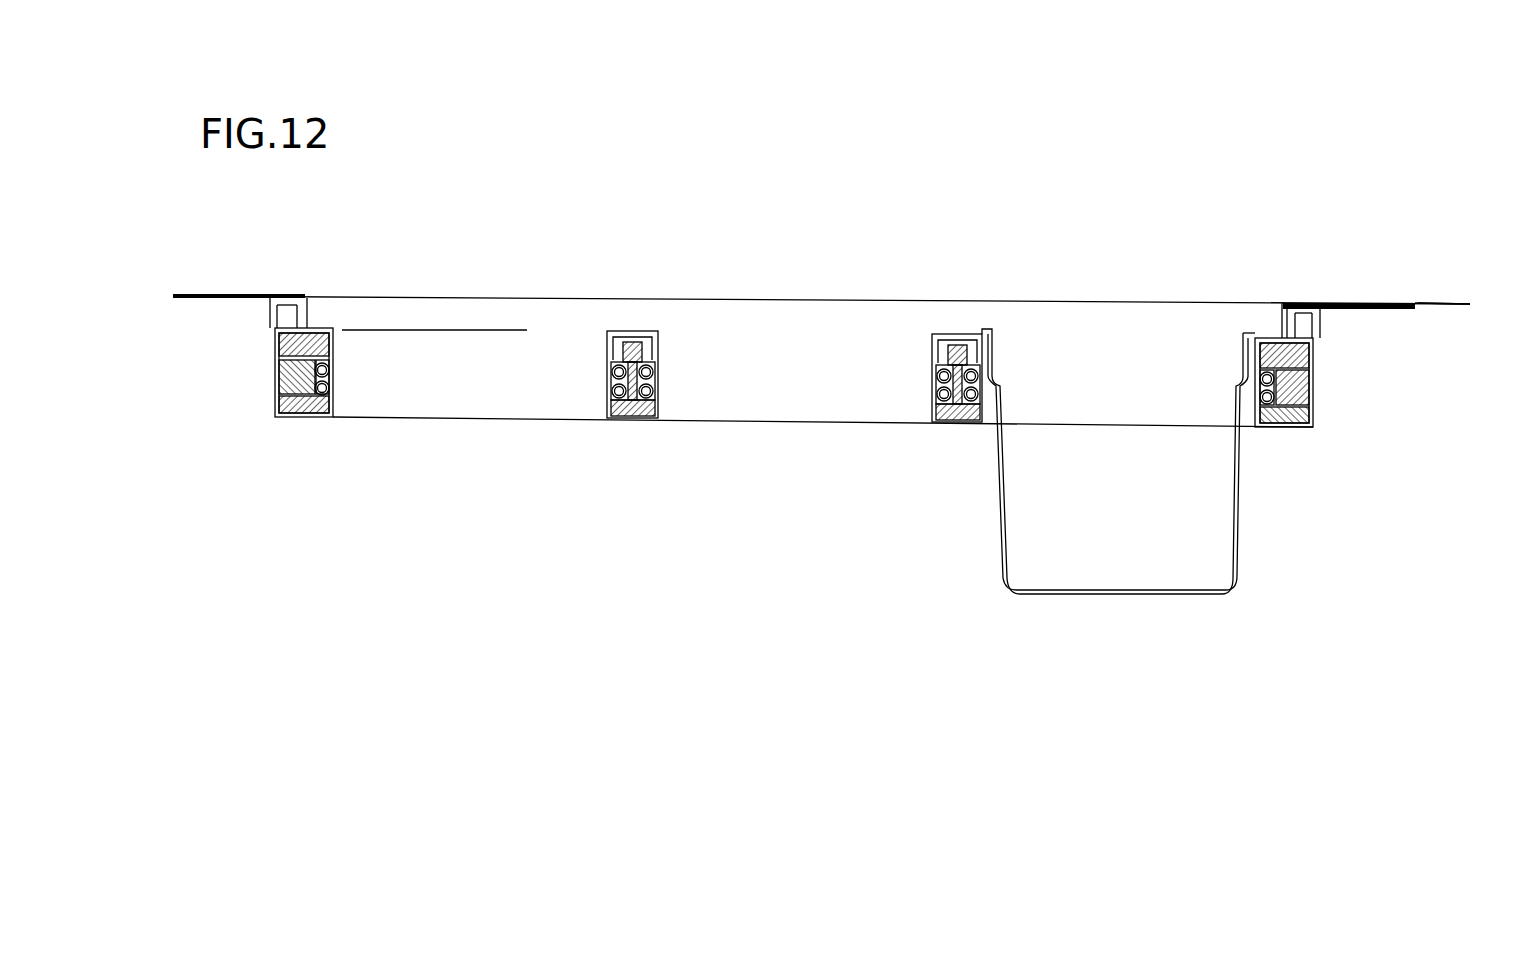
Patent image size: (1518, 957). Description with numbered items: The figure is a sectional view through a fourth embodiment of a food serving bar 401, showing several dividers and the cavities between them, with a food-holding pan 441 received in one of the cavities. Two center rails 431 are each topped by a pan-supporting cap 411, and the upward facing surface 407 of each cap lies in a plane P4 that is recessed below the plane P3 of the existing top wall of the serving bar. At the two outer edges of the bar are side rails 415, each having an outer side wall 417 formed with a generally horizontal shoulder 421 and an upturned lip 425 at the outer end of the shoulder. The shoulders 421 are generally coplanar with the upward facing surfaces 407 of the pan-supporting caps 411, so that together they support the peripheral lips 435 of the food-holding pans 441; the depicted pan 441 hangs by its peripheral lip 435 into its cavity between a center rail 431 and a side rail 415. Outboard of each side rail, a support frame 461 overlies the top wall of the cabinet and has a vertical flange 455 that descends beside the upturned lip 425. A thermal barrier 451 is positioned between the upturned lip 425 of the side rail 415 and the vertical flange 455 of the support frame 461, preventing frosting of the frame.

The food serving bar 401 is at (914, 182).
The upward facing surface 407 is at (628, 331).
The pan-supporting cap 411 is at (607, 342).
The side rail 415 is at (287, 418).
The outer side wall 417 is at (275, 375).
The shoulder 421 is at (335, 310).
The upturned lip 425 is at (270, 305).
The center rail 431 is at (648, 418).
The peripheral lip 435 is at (975, 330).
The food-holding pan 441 is at (1005, 555).
The thermal barrier 451 is at (303, 300).
The vertical flange 455 is at (307, 303).
The support frame 461 is at (222, 295).
The plane of the top wall P3 is at (1443, 303).
The plane of the cap surfaces P4 is at (411, 330).